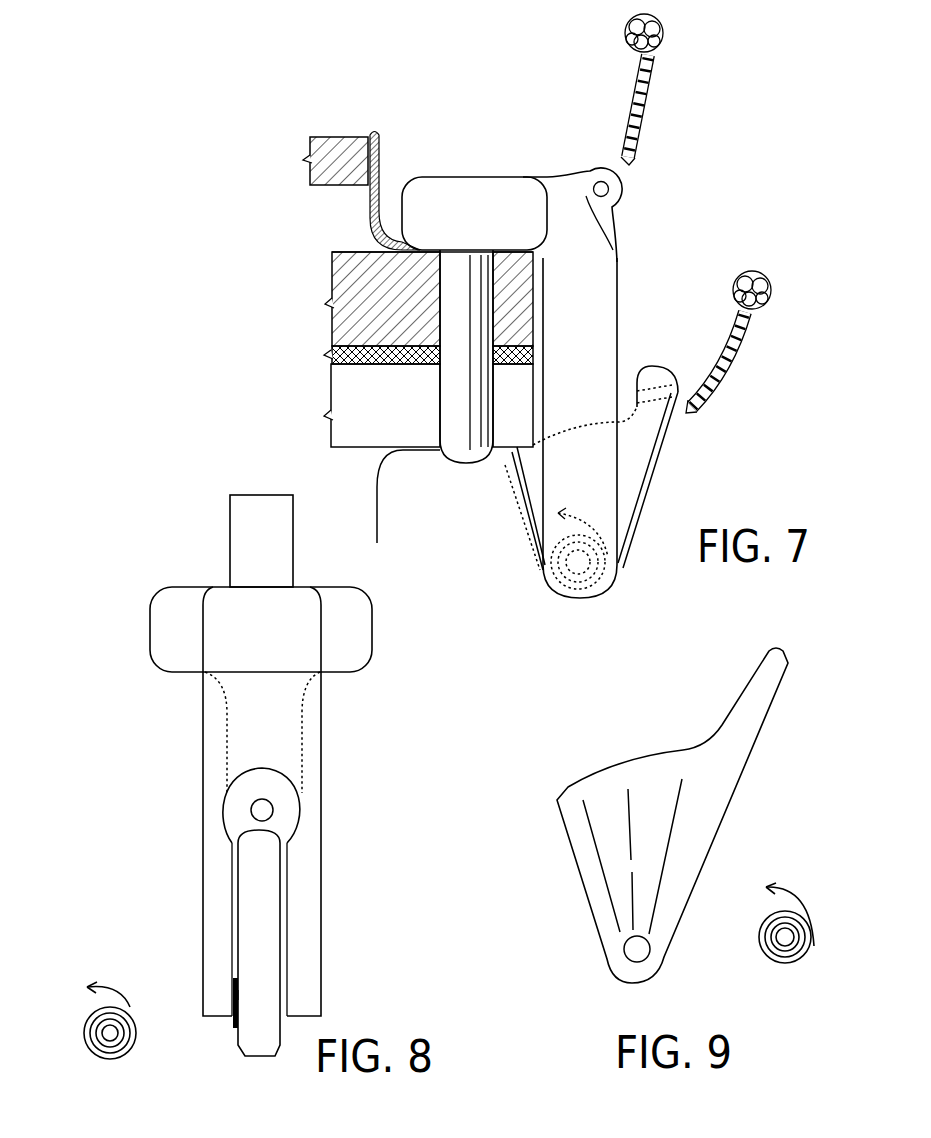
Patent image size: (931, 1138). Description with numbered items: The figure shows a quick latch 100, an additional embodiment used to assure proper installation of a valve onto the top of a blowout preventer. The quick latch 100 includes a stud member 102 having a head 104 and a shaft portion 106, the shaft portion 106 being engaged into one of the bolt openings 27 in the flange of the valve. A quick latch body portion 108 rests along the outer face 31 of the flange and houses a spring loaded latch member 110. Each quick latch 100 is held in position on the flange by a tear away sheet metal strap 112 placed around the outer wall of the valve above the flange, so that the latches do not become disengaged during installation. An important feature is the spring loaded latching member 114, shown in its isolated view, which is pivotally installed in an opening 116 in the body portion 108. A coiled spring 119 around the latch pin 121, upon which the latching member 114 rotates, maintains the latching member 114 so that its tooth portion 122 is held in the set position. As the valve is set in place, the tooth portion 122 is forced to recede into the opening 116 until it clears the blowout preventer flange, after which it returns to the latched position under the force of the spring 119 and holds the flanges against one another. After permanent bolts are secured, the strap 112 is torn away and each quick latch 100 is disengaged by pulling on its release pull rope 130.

In FIG. 7, the quick latch 100 is at (499, 140).
In FIG. 7, the stud member 102 is at (473, 195).
In FIG. 7, the head 104 is at (440, 215).
In FIG. 7, the shaft portion 106 is at (463, 318).
In FIG. 8, the quick latch body portion 108 is at (247, 712).
In FIG. 7, the spring loaded latch member 110 is at (650, 338).
In FIG. 7, the tear away sheet metal strap 112 is at (357, 157).
In FIG. 9, the spring loaded latching member 114 is at (760, 829).
In FIG. 8, the opening 116 is at (232, 883).
In FIG. 8, the coiled spring 119 is at (108, 973).
In FIG. 9, the coiled spring 119 is at (788, 942).
In FIG. 7, the latch pin 121 is at (573, 583).
In FIG. 8, the latch pin 121 is at (240, 995).
In FIG. 7, the tooth portion 122 is at (517, 510).
In FIG. 9, the tooth portion 122 is at (601, 800).
In FIG. 7, the release pull rope 130 is at (660, 73).
In FIG. 7, the bolt opening 27 is at (440, 265).
In FIG. 7, the outer face 31 is at (548, 300).